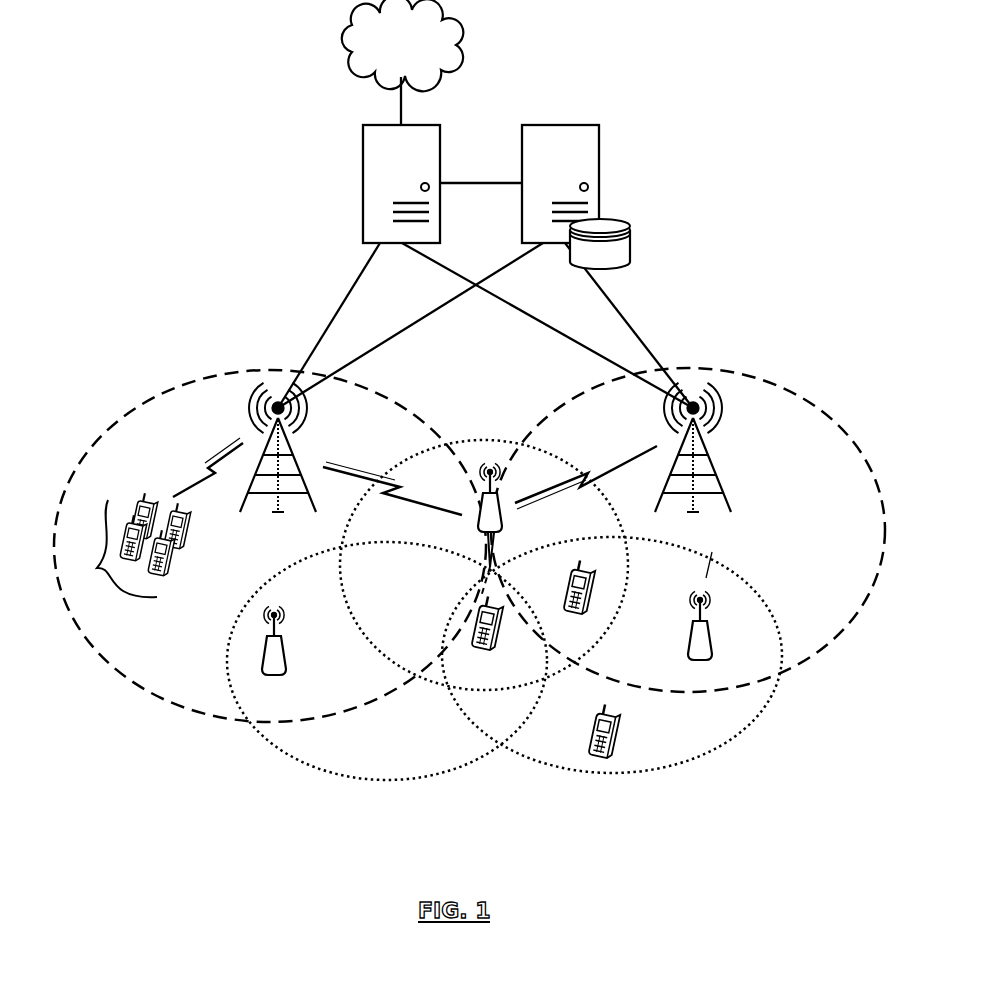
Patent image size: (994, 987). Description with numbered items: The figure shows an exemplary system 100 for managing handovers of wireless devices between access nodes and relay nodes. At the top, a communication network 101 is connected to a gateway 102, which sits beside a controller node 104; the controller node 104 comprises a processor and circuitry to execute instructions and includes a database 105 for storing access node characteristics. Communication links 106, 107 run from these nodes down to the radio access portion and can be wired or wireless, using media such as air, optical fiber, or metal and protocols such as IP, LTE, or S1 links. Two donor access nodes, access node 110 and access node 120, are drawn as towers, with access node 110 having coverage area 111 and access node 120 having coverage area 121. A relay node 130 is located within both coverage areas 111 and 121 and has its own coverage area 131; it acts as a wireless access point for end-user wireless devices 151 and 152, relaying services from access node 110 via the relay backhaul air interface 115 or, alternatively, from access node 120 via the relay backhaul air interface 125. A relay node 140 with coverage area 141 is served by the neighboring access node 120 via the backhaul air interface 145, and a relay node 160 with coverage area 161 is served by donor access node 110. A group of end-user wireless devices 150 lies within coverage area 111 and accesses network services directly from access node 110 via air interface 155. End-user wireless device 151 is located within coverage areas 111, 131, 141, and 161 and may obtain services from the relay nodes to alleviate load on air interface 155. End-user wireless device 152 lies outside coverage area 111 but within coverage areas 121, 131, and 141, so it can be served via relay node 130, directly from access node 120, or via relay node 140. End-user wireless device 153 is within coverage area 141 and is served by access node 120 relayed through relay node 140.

The system 100 is at (566, 64).
The communication network 101 is at (422, 52).
The gateway 102 is at (365, 183).
The controller node 104 is at (601, 184).
The database 105 is at (640, 244).
The communication link 106 is at (536, 325).
The communication link 107 is at (410, 325).
The access node 110 is at (247, 426).
The coverage area 111 is at (258, 546).
The air interface 115 is at (392, 470).
The access node 120 is at (730, 424).
The coverage area 121 is at (708, 530).
The air interface 125 is at (586, 465).
The relay node 130 is at (517, 526).
The coverage area 131 is at (484, 532).
The relay node 140 is at (727, 639).
The coverage area 141 is at (648, 655).
The air interface 145 is at (752, 542).
The end-user wireless devices 150 is at (97, 568).
The end-user wireless device 151 is at (506, 641).
The end-user wireless device 152 is at (621, 586).
The end-user wireless device 153 is at (630, 717).
The air interface 155 is at (212, 462).
The relay node 160 is at (302, 658).
The coverage area 161 is at (375, 662).